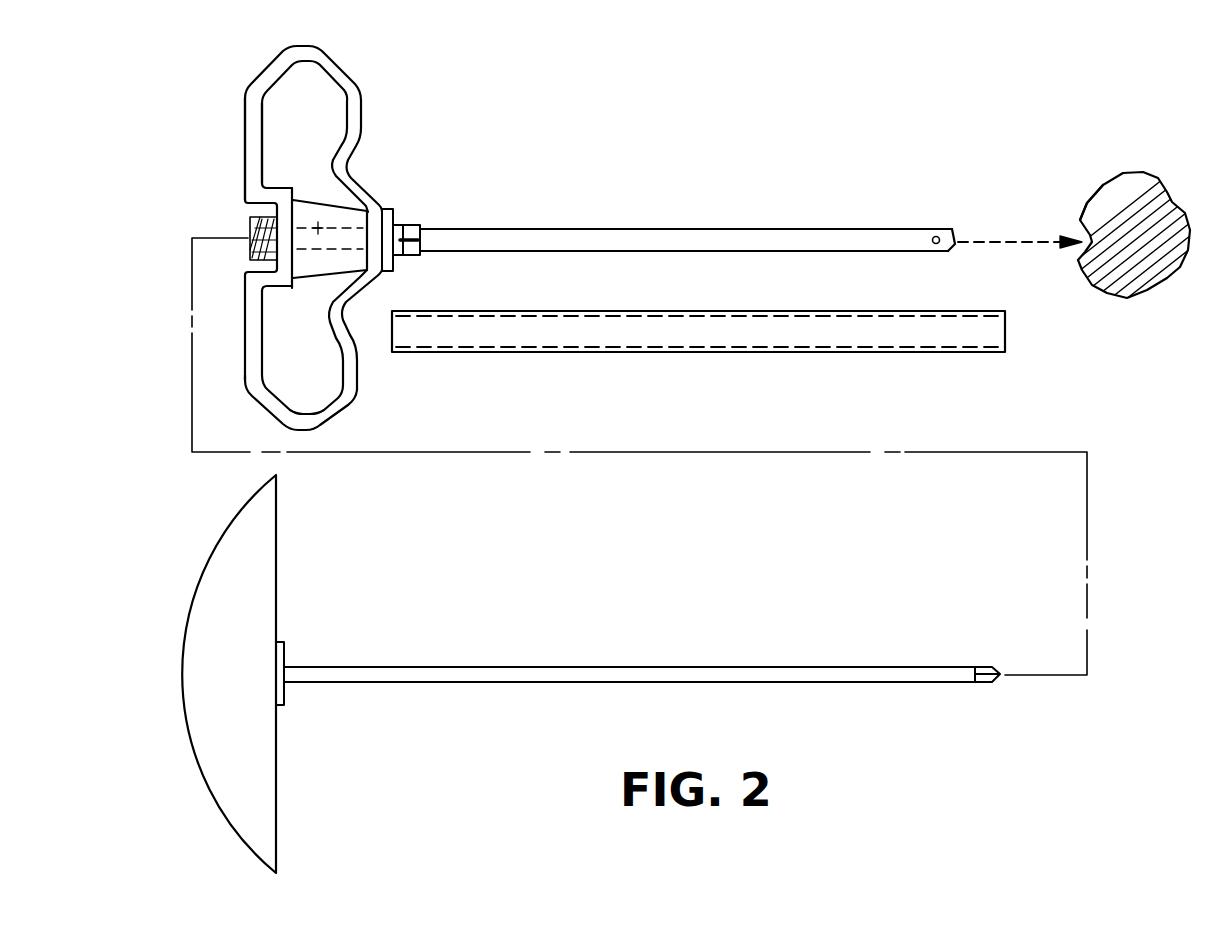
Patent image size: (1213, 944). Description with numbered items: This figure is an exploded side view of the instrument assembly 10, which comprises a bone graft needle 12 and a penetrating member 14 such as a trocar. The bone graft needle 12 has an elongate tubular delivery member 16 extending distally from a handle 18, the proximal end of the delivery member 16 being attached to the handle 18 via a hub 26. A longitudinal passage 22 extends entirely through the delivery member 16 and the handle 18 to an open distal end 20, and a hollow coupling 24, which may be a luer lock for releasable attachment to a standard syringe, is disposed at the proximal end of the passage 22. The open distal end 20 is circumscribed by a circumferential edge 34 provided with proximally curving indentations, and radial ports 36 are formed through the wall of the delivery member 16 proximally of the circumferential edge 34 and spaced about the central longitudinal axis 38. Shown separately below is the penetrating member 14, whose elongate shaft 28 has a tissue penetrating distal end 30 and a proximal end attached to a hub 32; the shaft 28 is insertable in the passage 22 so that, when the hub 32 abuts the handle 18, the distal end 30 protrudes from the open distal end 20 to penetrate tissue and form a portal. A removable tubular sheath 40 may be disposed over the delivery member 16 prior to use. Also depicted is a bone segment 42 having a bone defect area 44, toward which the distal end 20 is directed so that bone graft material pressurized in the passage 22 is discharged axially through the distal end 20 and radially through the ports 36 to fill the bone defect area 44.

The instrument assembly 10 is at (754, 165).
The bone graft needle 12 is at (482, 198).
The penetrating member 14 is at (826, 660).
The delivery member 16 is at (650, 225).
The handle 18 is at (245, 135).
The open distal end 20 is at (966, 238).
The longitudinal passage 22 is at (318, 226).
The coupling 24 is at (247, 249).
The hub 26 is at (414, 222).
The shaft 28 is at (468, 660).
The tissue penetrating distal end 30 is at (988, 683).
The hub 32 is at (184, 612).
The circumferential edge 34 is at (953, 250).
The radial ports 36 is at (930, 238).
The central longitudinal axis 38 is at (1027, 247).
The removable tubular sheath 40 is at (752, 360).
The bone segment 42 is at (1176, 202).
The bone defect area 44 is at (1081, 232).